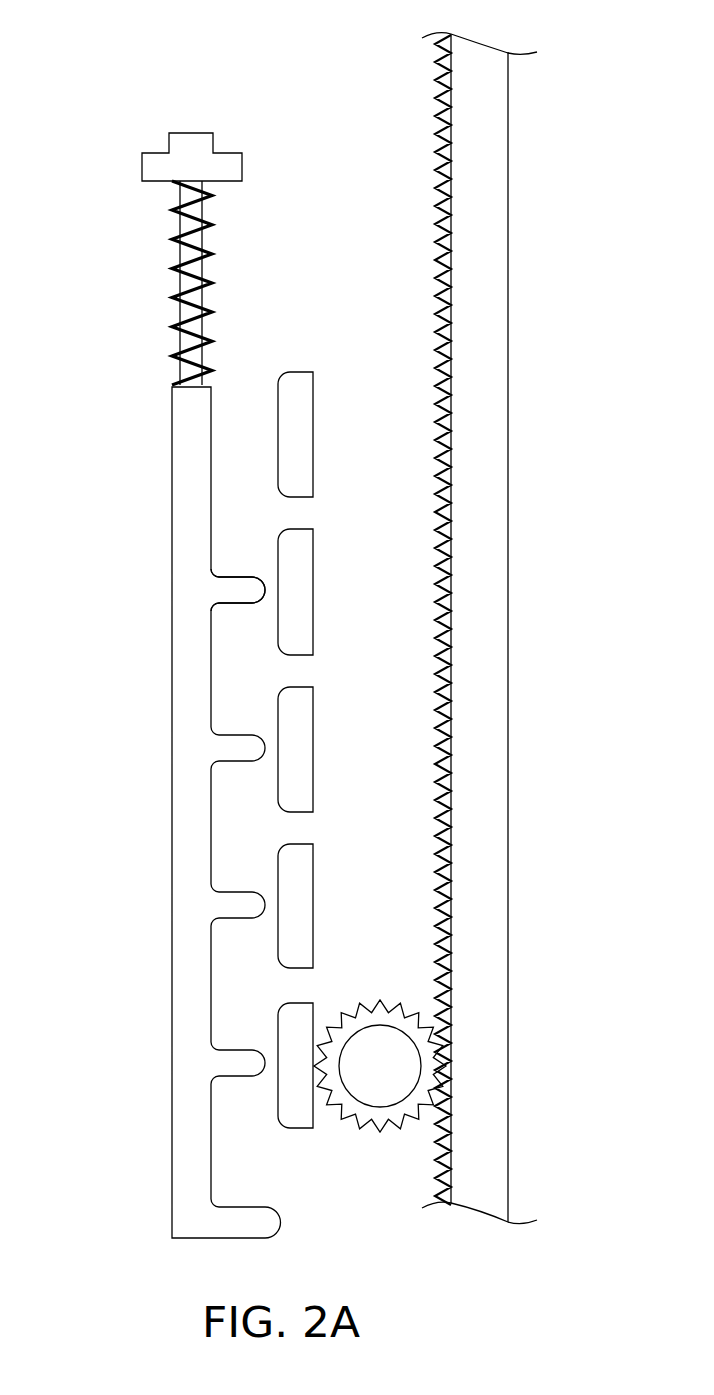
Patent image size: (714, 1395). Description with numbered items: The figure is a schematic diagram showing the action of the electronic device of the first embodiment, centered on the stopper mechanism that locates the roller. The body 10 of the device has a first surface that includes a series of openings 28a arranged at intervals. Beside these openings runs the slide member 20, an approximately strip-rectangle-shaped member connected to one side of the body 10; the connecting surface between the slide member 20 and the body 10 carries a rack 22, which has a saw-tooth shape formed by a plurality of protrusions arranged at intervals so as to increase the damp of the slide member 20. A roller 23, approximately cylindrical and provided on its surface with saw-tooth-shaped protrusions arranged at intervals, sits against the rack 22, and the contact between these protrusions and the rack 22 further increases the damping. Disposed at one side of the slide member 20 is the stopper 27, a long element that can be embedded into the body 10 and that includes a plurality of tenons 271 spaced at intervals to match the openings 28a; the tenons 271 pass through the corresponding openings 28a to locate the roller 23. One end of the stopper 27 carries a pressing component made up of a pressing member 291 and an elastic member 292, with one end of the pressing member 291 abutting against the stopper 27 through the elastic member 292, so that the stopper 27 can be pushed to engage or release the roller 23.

The body 10 is at (302, 428).
The slide member 20 is at (487, 268).
The rack 22 is at (445, 205).
The roller 23 is at (393, 1010).
The stopper 27 is at (162, 441).
The tenons 271 is at (263, 590).
The openings 28a is at (302, 511).
The pressing member 291 is at (158, 165).
The elastic member 292 is at (177, 245).